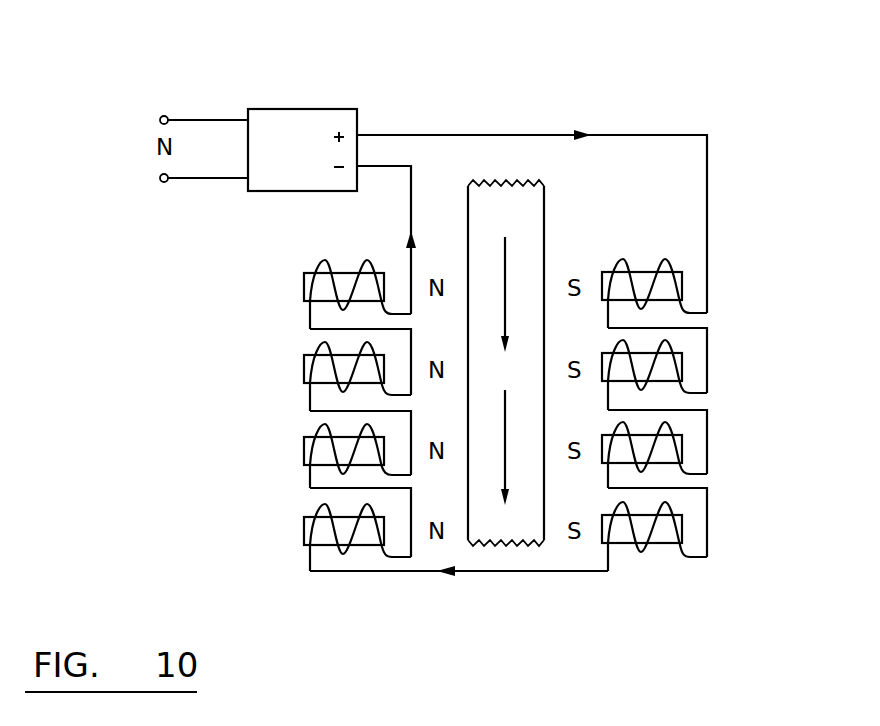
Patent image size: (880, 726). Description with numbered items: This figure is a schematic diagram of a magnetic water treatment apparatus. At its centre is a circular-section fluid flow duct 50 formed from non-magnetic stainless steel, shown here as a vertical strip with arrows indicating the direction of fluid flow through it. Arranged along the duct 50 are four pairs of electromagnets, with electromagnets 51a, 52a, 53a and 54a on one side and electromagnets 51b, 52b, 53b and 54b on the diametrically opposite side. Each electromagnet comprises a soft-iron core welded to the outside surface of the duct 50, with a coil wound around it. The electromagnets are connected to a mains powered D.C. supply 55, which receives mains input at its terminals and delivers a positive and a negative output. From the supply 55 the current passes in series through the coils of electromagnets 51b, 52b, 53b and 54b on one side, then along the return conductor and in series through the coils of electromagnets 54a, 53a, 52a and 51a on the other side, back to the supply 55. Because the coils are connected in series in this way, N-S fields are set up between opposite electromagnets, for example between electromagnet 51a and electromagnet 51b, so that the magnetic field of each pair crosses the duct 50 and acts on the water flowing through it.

The mains powered D.C. supply 55 is at (288, 136).
The fluid flow duct 50 is at (517, 213).
The electromagnet 51a is at (310, 290).
The electromagnet 52a is at (310, 373).
The electromagnet 53a is at (310, 453).
The electromagnet 54a is at (310, 533).
The electromagnet 51b is at (668, 283).
The electromagnet 52b is at (668, 365).
The electromagnet 53b is at (668, 450).
The electromagnet 54b is at (670, 528).